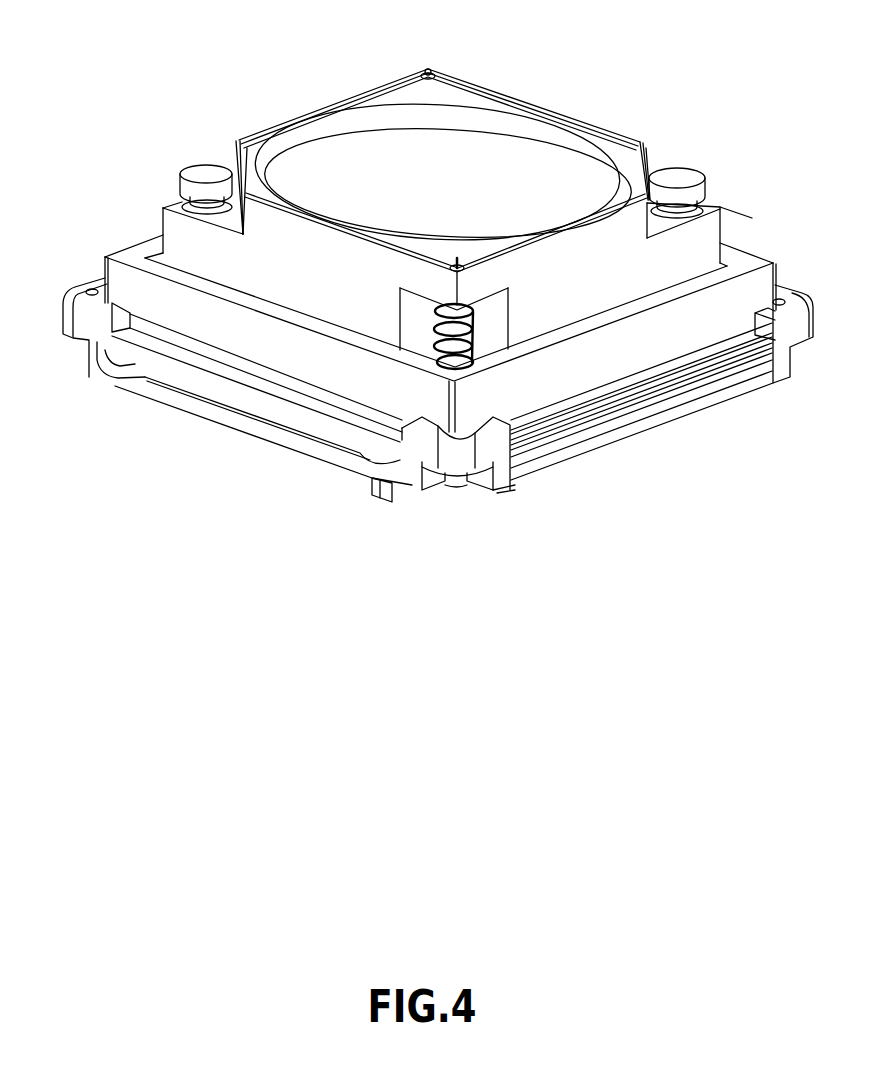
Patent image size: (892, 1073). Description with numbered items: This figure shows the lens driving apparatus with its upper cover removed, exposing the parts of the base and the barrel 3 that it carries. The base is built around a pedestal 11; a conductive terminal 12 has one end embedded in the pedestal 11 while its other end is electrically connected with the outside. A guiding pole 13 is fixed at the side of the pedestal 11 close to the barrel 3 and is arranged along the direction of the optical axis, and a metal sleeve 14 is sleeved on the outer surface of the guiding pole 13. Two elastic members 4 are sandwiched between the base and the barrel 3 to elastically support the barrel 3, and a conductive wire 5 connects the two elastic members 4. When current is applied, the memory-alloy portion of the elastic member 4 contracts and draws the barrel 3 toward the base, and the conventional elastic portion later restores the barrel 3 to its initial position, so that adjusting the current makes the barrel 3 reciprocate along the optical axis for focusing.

The barrel 3 is at (588, 267).
The elastic member 4 is at (473, 345).
The conductive wire 5 is at (284, 120).
The pedestal 11 is at (168, 318).
The conductive terminal 12 is at (381, 492).
The guiding pole 13 is at (203, 180).
The metal sleeve 14 is at (163, 209).